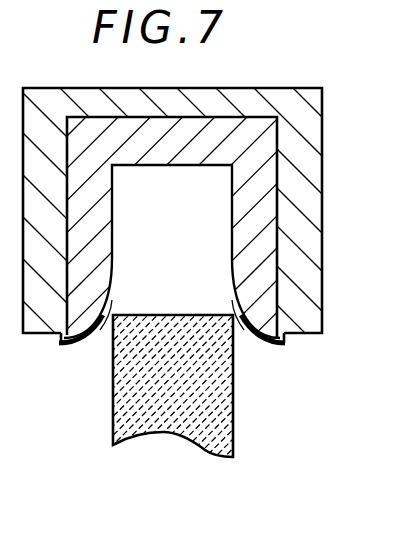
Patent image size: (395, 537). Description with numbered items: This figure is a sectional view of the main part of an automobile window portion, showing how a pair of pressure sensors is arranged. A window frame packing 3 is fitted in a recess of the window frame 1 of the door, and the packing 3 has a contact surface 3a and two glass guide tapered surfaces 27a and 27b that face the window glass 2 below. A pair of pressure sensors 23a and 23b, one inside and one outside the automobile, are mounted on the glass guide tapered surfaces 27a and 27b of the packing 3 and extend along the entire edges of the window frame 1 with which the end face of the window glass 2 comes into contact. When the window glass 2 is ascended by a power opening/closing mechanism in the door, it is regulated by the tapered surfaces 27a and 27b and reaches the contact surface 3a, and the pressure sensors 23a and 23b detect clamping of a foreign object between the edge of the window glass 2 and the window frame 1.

The window frame 1 is at (322, 166).
The window glass 2 is at (237, 410).
The window frame packing 3 is at (232, 193).
The contact surface 3a is at (147, 165).
The pressure sensor 23a is at (87, 345).
The pressure sensor 23b is at (280, 348).
The glass guide tapered surface 27a is at (95, 337).
The glass guide tapered surface 27b is at (238, 303).